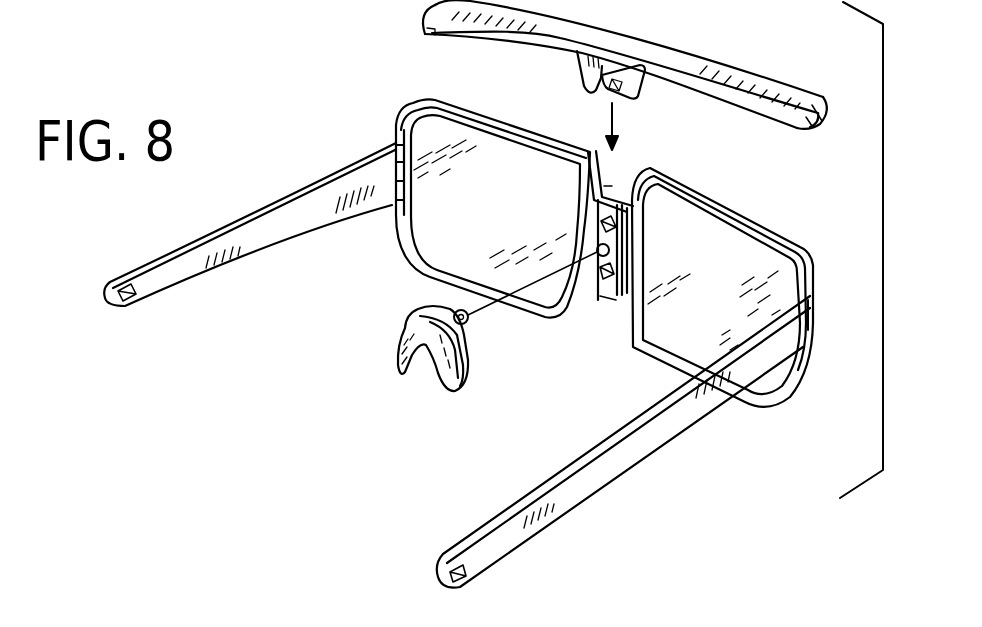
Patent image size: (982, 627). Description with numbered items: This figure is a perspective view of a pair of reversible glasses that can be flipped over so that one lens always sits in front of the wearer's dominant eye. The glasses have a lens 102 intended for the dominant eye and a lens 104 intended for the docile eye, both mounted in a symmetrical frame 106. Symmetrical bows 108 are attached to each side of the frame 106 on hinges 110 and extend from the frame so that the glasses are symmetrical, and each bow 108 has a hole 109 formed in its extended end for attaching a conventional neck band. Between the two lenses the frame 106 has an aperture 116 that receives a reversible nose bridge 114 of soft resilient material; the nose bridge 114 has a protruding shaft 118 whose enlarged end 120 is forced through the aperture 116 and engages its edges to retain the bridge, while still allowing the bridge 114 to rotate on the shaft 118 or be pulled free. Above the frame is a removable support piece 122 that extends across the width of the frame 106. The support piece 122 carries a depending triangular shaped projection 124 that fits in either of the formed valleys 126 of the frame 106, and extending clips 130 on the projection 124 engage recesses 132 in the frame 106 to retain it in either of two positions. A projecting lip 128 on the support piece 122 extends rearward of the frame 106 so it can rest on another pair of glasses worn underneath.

The lens 102 is at (727, 316).
The lens 104 is at (489, 206).
The frame 106 is at (753, 210).
The bows 108 is at (260, 233).
The holes 109 is at (133, 302).
The hinges 110 is at (393, 175).
The nose bridge 114 is at (437, 375).
The aperture 116 is at (598, 249).
The shaft 118 is at (467, 327).
The enlarged end 120 is at (470, 325).
The support piece 122 is at (679, 58).
The triangular shaped projection 124 is at (640, 92).
The formed valleys 126 is at (610, 193).
The projecting lip 128 is at (803, 97).
The clips 130 is at (578, 78).
The recesses 132 is at (617, 277).